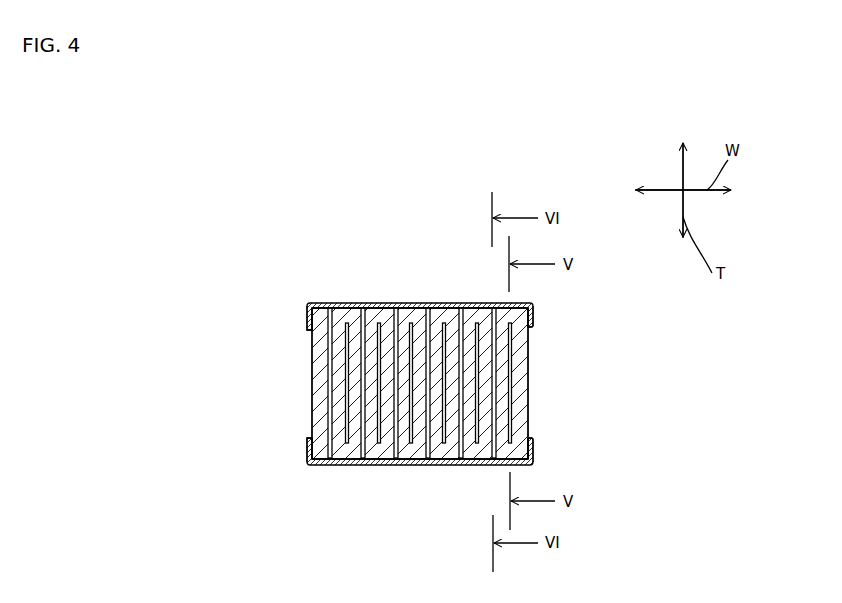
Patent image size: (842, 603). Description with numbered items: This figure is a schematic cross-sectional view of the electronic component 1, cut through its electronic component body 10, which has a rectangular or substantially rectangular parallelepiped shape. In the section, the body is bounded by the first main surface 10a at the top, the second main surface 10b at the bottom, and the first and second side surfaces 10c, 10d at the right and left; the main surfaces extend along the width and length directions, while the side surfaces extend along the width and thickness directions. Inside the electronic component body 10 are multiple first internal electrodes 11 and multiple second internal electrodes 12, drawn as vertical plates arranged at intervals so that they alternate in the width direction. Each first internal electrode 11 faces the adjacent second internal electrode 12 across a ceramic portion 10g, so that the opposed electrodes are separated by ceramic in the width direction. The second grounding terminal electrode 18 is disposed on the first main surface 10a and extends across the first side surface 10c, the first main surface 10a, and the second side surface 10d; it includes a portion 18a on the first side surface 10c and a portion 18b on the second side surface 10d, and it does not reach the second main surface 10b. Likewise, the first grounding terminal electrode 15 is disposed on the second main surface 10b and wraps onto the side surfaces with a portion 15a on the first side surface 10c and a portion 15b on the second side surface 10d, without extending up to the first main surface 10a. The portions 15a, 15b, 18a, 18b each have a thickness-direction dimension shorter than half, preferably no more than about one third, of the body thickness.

The electronic component 1 is at (432, 363).
The electronic component body 10 is at (432, 371).
The first main surface 10a is at (374, 307).
The second main surface 10b is at (398, 465).
The first side surface 10c is at (530, 385).
The second side surface 10d is at (310, 430).
The ceramic portion 10g is at (500, 430).
The first internal electrode 11 is at (318, 351).
The second internal electrode 12 is at (328, 392).
The first grounding terminal electrode 15 is at (438, 502).
The portion of first grounding terminal electrode 15a is at (533, 445).
The portion of first grounding terminal electrode 15b is at (307, 452).
The second grounding terminal electrode 18 is at (438, 264).
The portion of second grounding terminal electrode 18a is at (533, 317).
The portion of second grounding terminal electrode 18b is at (299, 308).